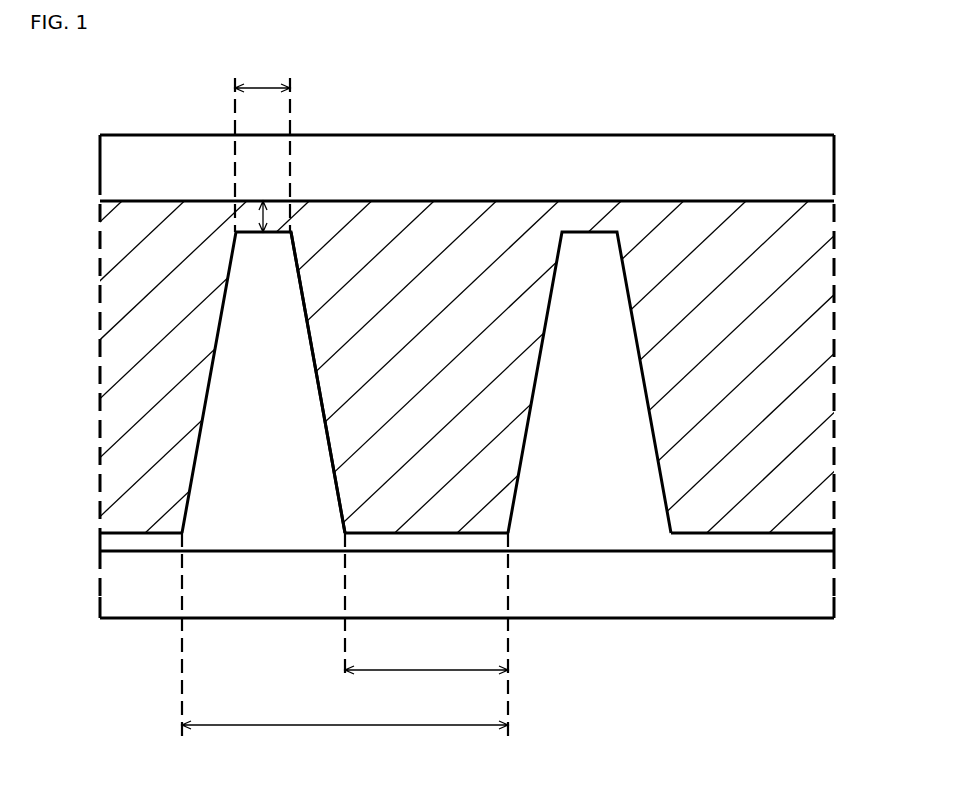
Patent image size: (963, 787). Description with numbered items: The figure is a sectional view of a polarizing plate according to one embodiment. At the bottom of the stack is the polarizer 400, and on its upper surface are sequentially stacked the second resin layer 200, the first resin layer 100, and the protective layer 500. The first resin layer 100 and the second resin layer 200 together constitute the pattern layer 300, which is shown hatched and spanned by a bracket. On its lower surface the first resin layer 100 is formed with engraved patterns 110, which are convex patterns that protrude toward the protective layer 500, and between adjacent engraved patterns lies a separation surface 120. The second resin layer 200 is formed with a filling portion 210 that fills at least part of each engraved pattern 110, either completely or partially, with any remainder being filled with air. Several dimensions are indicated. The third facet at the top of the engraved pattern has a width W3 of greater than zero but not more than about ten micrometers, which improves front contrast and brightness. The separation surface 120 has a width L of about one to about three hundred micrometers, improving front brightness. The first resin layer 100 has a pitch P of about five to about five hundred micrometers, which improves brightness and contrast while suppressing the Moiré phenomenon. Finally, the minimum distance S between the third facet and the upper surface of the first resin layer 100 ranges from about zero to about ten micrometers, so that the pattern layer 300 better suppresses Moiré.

The first resin layer 100 is at (107, 310).
The engraved pattern 110 is at (328, 431).
The separation surface 120 is at (480, 533).
The second resin layer 200 is at (107, 540).
The filling portion 210 is at (225, 488).
The pattern layer 300 is at (855, 201).
The polarizer 400 is at (822, 583).
The protective layer 500 is at (822, 170).
The minimum distance S is at (263, 218).
The width of third facet W3 is at (262, 143).
The width of separation surface L is at (426, 606).
The pitch P is at (345, 635).